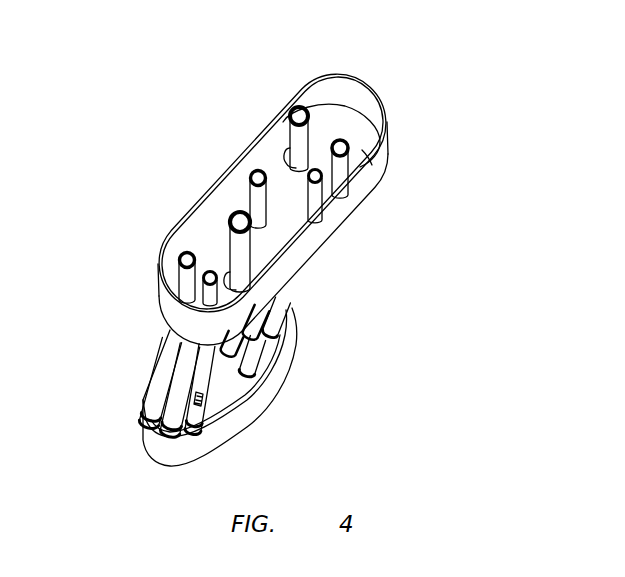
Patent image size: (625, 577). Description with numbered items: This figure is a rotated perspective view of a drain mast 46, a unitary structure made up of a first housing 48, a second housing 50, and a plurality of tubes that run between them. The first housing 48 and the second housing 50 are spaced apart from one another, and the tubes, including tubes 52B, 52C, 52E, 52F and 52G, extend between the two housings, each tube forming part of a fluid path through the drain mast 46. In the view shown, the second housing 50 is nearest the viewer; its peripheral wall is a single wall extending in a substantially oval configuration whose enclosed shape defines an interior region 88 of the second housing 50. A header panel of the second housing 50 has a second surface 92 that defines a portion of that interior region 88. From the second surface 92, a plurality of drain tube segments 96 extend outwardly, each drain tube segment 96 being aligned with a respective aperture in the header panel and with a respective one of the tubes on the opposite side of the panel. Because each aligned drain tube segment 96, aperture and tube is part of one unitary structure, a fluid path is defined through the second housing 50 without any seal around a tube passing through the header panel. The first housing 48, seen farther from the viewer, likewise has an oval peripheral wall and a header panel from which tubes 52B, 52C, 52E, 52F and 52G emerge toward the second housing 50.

The drain mast 46 is at (437, 244).
The first housing 48 is at (273, 405).
The second housing 50 is at (400, 154).
The tube 52B is at (251, 357).
The tube 52C is at (273, 322).
The tube 52E is at (191, 412).
The tube 52F is at (157, 370).
The tube 52G is at (141, 433).
The interior region 88 is at (338, 120).
The second surface 92 is at (357, 138).
The drain tube segment 96 is at (287, 114).